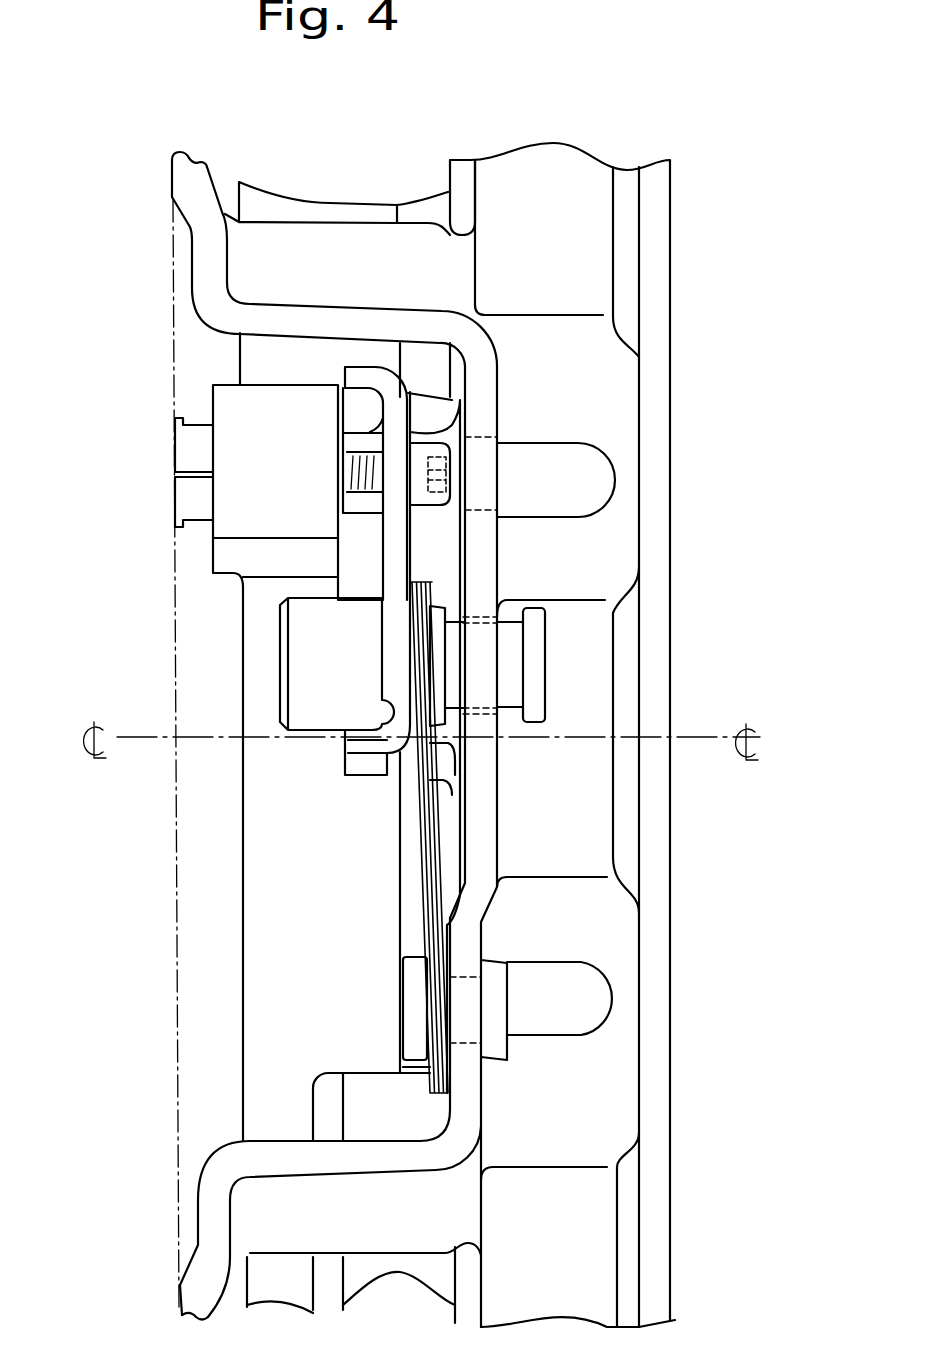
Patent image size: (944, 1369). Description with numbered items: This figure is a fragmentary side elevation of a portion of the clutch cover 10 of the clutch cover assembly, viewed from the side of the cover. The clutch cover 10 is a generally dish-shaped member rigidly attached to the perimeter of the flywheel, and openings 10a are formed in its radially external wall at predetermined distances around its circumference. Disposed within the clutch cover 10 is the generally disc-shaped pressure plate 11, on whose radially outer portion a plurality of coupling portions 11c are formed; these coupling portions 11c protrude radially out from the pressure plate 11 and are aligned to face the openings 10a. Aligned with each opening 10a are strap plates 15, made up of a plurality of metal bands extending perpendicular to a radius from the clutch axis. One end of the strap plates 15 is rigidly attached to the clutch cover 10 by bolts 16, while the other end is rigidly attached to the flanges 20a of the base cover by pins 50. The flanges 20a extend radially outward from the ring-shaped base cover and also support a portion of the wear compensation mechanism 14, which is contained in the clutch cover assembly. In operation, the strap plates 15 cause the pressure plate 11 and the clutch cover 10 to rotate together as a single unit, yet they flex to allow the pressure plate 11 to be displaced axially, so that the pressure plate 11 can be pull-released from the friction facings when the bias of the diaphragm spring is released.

The clutch cover 10 is at (190, 180).
The openings 10a is at (277, 337).
The pressure plate 11 is at (270, 803).
The coupling portions 11c is at (250, 443).
The flanges 20a is at (397, 545).
The wear compensation mechanism 14 is at (432, 557).
The strap plates 15 is at (423, 850).
The bolts 16 is at (417, 995).
The pins 50 is at (533, 667).